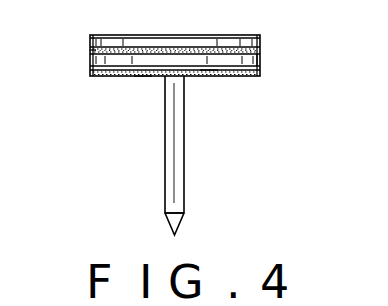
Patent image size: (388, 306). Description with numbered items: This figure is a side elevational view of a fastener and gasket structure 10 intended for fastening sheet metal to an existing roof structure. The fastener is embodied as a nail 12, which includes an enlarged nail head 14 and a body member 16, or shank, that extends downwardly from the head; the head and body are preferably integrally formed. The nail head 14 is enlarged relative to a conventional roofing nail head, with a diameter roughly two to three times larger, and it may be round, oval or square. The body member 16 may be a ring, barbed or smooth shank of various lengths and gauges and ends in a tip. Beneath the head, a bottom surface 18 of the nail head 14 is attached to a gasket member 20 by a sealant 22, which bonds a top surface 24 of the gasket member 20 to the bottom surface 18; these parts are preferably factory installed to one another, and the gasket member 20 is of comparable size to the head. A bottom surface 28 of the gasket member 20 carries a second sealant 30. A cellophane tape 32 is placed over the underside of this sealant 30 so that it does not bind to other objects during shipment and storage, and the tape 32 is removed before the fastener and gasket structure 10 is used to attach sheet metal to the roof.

The fastener and gasket structure 10 is at (304, 135).
The nail 12 is at (256, 22).
The nail head 14 is at (105, 41).
The body member 16 is at (184, 170).
The bottom surface 18 is at (258, 57).
The gasket member 20 is at (121, 66).
The sealant 22 is at (93, 50).
The top surface 24 is at (170, 53).
The bottom surface 28 is at (256, 75).
The sealant 30 is at (209, 76).
The cellophane tape 32 is at (143, 76).